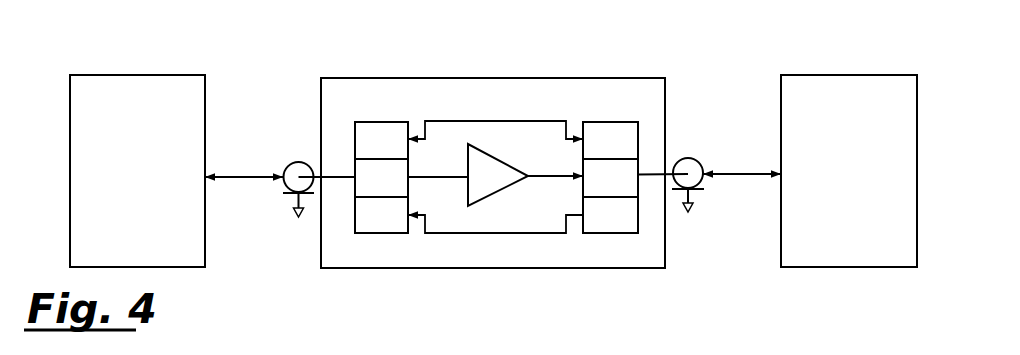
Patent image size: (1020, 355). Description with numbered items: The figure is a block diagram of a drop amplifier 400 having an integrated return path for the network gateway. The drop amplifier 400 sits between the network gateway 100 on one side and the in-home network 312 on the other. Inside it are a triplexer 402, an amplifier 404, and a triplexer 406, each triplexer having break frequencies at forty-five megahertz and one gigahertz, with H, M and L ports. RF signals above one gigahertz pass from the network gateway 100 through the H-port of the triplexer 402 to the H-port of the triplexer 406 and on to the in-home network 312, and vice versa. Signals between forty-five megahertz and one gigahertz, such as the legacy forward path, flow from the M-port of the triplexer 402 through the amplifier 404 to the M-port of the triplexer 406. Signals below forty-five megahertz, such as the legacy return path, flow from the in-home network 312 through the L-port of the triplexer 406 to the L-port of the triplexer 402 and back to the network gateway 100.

The network gateway 100 is at (157, 75).
The in-home network 312 is at (860, 75).
The drop amplifier 400 is at (552, 78).
The triplexer 402 is at (390, 122).
The amplifier 404 is at (498, 175).
The triplexer 406 is at (633, 122).